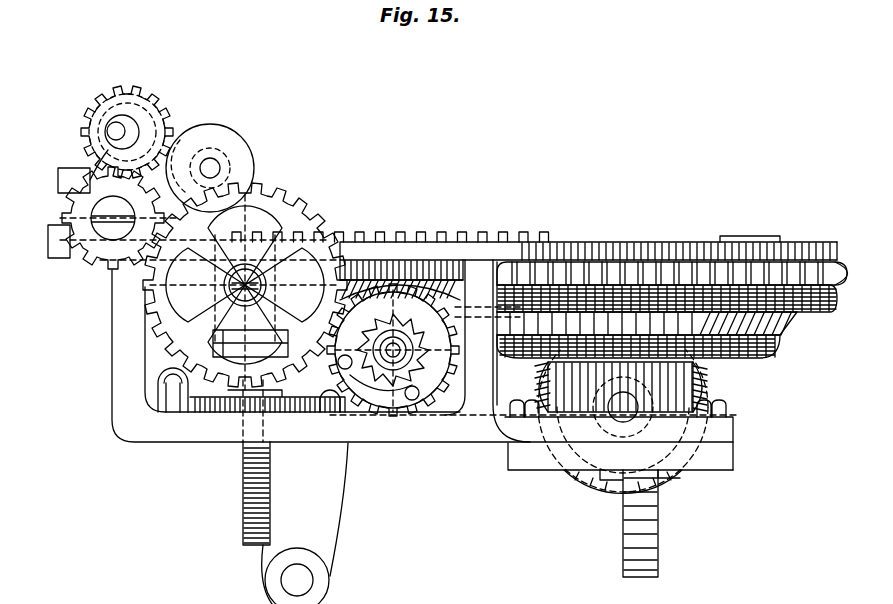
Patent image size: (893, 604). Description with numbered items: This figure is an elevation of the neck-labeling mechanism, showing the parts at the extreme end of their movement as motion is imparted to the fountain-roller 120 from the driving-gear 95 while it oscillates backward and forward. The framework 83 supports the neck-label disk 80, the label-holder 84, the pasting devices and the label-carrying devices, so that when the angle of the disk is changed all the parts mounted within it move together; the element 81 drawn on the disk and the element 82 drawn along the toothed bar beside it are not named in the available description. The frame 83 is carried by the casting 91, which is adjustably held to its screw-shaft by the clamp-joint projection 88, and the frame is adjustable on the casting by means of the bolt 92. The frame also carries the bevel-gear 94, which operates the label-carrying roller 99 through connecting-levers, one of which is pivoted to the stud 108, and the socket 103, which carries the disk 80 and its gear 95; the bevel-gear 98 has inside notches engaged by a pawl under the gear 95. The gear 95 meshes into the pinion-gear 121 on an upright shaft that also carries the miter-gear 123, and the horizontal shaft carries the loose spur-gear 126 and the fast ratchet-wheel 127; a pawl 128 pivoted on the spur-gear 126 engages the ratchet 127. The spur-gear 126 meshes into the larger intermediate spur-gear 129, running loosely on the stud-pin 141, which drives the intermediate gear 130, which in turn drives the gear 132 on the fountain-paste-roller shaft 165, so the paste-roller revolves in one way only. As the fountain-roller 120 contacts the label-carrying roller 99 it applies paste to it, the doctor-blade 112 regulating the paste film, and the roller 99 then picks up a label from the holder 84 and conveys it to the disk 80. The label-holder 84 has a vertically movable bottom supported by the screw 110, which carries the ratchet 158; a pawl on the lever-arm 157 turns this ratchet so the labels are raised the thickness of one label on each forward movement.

The gear 132 is at (112, 105).
The fountain-paste-roller shaft 165 is at (127, 135).
The fountain-roller 120 is at (157, 123).
The doctor-blade 112 is at (78, 167).
The label-carrying roller 99 is at (253, 147).
The intermediate spur-gear 129 is at (318, 217).
The pinion-gear 121 is at (395, 260).
The miter-gear 123 is at (440, 282).
The rack bar 82 is at (503, 240).
The neck-label disk 80 is at (712, 253).
The drum key 81 is at (768, 243).
The intermediate gear 130 is at (95, 258).
The stud-pin 141 is at (230, 286).
The gear 95 is at (844, 290).
The bevel-gear 98 is at (783, 335).
The bevel-gear 94 is at (707, 383).
The socket 103 is at (727, 401).
The bolt 92 is at (728, 410).
The framework 83 is at (130, 423).
The casting 91 is at (728, 458).
The lever-arm 157 is at (177, 393).
The label-holder 84 is at (238, 347).
The screw 110 is at (243, 519).
The pawl 128 is at (378, 386).
The ratchet 158 is at (297, 420).
The ratchet-wheel 127 is at (418, 376).
The spur-gear 126 is at (445, 398).
The stud 108 is at (327, 583).
The clamp-joint projection 88 is at (660, 541).